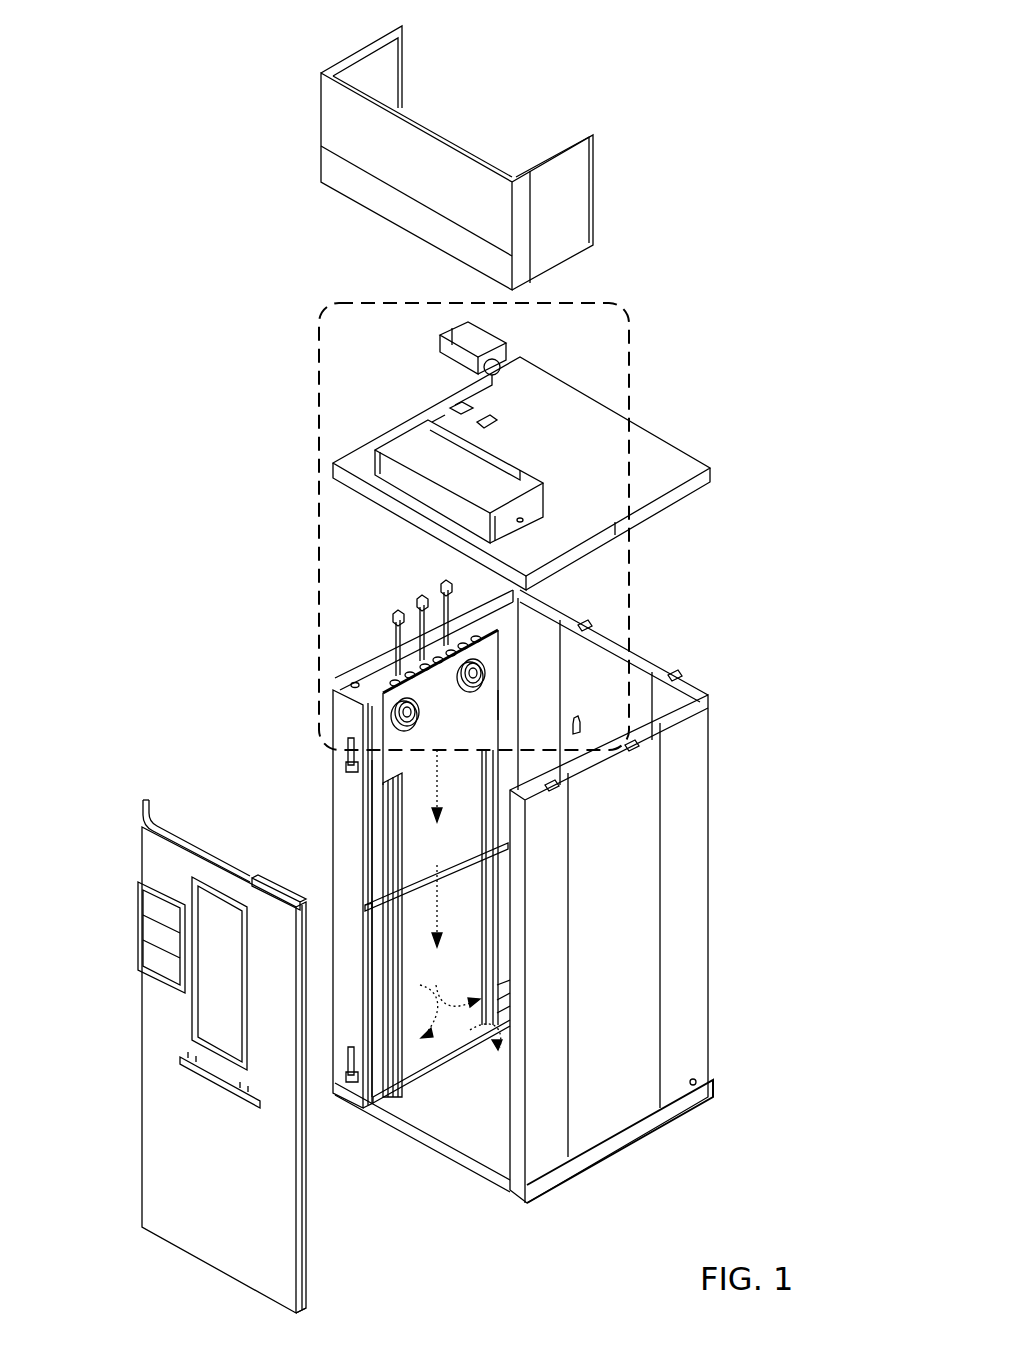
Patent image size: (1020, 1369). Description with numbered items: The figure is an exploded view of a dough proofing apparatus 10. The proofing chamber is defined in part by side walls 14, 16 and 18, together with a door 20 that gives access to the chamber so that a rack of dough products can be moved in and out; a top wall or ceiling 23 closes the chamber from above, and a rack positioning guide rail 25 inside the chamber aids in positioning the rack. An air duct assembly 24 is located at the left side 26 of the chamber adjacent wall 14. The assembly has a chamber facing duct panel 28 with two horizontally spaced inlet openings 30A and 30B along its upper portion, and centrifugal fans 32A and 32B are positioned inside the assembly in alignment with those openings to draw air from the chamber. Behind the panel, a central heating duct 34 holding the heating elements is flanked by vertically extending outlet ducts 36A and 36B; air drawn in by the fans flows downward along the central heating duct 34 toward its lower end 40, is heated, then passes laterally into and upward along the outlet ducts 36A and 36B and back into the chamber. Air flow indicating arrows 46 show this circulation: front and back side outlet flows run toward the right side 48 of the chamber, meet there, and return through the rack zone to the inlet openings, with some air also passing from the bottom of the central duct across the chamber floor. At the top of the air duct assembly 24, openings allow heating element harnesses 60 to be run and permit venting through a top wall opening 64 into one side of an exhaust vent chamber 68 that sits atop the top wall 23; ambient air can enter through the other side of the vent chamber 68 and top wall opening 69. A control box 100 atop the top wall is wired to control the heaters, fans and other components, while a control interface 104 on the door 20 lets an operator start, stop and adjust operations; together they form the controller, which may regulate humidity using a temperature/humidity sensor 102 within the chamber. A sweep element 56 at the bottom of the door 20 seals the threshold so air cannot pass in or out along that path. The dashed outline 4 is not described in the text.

The dough proofing apparatus 10 is at (660, 292).
The electronics module 4 is at (316, 368).
The top wall or ceiling 23 is at (690, 450).
The control box 100 is at (433, 498).
The exhaust vent chamber 68 is at (438, 357).
The top wall opening 64 is at (448, 406).
The top wall opening 69 is at (494, 422).
The heating element harnesses 60 is at (390, 626).
The air duct assembly 24 is at (400, 684).
The side wall 14 is at (499, 630).
The inlet opening 30A is at (420, 708).
The fan 32A is at (418, 722).
The inlet opening 30B is at (472, 660).
The fan 32B is at (485, 670).
The chamber facing duct panel 28 is at (499, 706).
The temperature/humidity sensor 102 is at (578, 716).
The side of the chamber 26 is at (348, 1110).
The outlet duct 36A is at (382, 863).
The central heating duct 34 is at (415, 823).
The outlet duct 36B is at (497, 915).
The rack positioning guide rail 25 is at (470, 868).
The lower end of the central heating duct 40 is at (416, 1060).
The right side of the chamber 48 is at (504, 1192).
The side wall 16 is at (640, 680).
The side wall 18 is at (640, 832).
The air flow indicating arrows 46 is at (440, 770).
The door 20 is at (160, 1156).
The sweep element 56 is at (308, 1310).
The control interface 104 is at (136, 945).